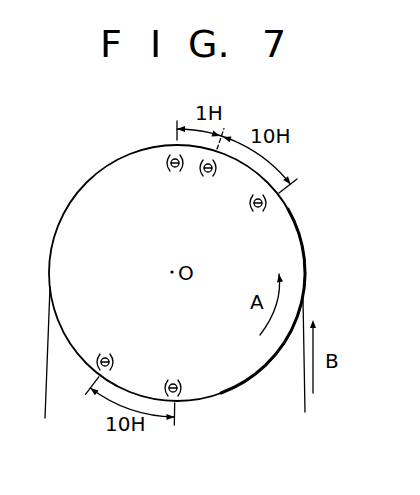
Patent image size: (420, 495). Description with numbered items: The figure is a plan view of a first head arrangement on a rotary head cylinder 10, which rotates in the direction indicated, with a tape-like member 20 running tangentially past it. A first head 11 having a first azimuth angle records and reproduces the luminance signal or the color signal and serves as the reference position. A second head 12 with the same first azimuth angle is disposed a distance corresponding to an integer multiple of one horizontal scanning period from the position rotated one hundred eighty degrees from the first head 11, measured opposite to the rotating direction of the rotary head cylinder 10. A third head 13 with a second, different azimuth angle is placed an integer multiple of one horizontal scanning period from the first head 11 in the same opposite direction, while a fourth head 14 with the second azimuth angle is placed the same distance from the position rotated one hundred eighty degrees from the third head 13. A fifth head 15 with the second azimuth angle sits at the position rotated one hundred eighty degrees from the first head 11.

The rotary head cylinder 10 is at (284, 236).
The first head 11 is at (180, 379).
The second head 12 is at (207, 177).
The third head 13 is at (104, 353).
The fourth head 14 is at (253, 204).
The fifth head 15 is at (168, 166).
The web / sheet 20 is at (305, 300).